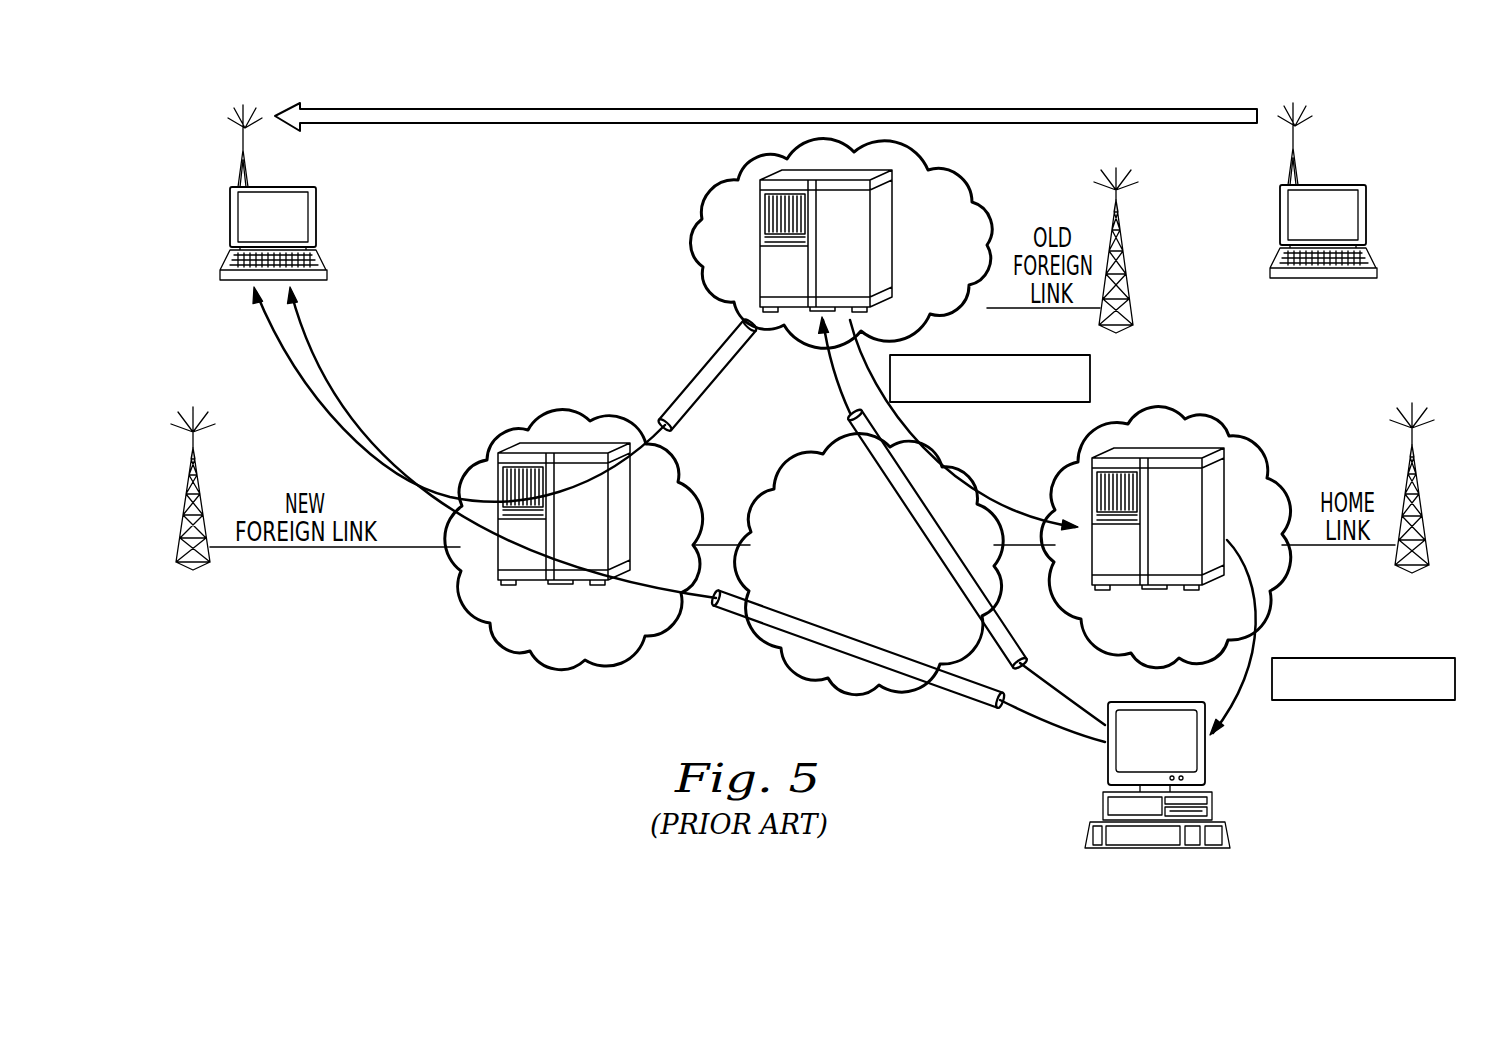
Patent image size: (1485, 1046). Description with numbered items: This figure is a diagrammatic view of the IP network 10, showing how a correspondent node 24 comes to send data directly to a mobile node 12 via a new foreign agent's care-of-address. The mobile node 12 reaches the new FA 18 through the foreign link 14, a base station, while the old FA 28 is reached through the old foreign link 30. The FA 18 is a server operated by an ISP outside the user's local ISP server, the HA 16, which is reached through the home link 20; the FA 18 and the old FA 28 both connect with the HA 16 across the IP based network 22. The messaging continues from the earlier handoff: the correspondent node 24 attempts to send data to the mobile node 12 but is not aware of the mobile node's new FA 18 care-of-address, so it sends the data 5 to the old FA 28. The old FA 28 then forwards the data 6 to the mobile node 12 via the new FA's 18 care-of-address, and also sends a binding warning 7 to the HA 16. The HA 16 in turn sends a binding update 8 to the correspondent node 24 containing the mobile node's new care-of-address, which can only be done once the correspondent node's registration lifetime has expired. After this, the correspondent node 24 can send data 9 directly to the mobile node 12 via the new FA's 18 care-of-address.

The mobile node 12 is at (316, 214).
The foreign link 14 is at (182, 512).
The old foreign link 30 is at (1127, 275).
The home link 20 is at (1423, 510).
The old FA 28 is at (760, 250).
The FA 18 is at (620, 513).
The HA 16 is at (1210, 518).
The IP based network 22 is at (845, 597).
The correspondent node 24 is at (1205, 760).
The sending of data to the old FA 5 is at (962, 521).
The forwarding of data to the mobile node 6 is at (505, 394).
The binding warning 7 is at (970, 425).
The binding update 8 is at (1332, 637).
The data packet path from correspondent node to mobile node 9 is at (697, 521).
The IP network 10 is at (437, 720).